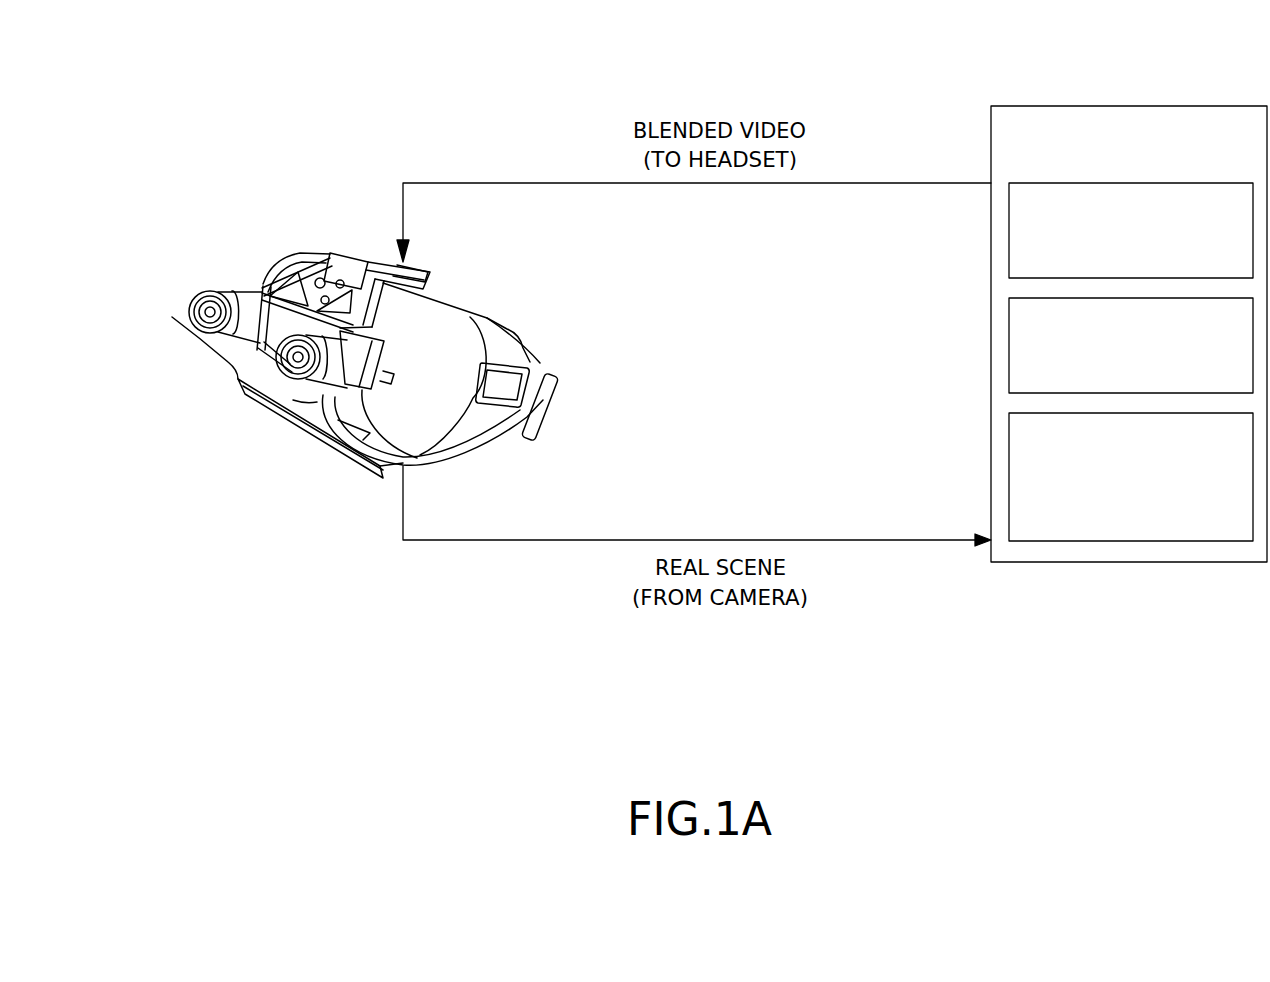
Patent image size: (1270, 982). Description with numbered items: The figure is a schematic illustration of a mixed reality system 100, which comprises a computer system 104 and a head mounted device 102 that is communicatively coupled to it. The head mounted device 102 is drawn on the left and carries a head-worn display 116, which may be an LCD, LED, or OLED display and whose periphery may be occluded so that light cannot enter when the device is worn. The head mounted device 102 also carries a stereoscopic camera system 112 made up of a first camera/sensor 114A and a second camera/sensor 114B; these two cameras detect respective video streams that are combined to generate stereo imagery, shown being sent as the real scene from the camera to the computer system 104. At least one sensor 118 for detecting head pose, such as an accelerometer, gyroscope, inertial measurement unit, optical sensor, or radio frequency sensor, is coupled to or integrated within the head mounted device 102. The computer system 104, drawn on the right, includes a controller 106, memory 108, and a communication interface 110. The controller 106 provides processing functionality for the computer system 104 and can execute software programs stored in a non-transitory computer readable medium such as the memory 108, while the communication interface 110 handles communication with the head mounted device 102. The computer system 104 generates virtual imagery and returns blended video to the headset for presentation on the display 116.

The mixed reality system 100 is at (343, 82).
The head mounted device 102 is at (370, 260).
The computer system 104 is at (1036, 133).
The controller 106 is at (1055, 211).
The memory 108 is at (1055, 327).
The communication interface 110 is at (1055, 443).
The stereoscopic camera system 112 is at (233, 381).
The first camera/sensor 114A is at (210, 290).
The second camera/sensor 114B is at (295, 398).
The head-worn display 116 is at (423, 432).
The sensor 118 is at (525, 368).